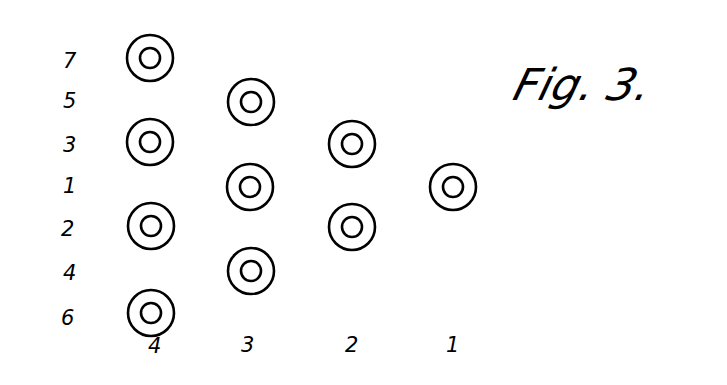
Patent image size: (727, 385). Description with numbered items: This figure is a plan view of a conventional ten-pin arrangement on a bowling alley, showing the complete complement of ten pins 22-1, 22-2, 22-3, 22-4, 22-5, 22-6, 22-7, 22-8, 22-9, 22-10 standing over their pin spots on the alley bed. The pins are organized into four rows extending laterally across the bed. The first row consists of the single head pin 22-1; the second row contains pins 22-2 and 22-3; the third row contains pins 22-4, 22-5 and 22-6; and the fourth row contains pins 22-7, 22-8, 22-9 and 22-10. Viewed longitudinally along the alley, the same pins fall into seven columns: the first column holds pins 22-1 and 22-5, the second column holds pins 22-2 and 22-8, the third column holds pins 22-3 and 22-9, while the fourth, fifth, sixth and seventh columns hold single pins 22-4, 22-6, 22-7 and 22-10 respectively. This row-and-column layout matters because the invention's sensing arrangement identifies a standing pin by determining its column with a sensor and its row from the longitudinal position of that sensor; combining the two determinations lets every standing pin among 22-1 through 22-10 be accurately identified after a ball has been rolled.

The pin 22-1 is at (471, 177).
The pin 22-2 is at (370, 222).
The pin 22-3 is at (370, 134).
The pin 22-4 is at (269, 263).
The pin 22-5 is at (268, 177).
The pin 22-6 is at (269, 92).
The pin 22-7 is at (177, 310).
The pin 22-8 is at (169, 216).
The pin 22-9 is at (168, 132).
The pin 22-10 is at (168, 48).